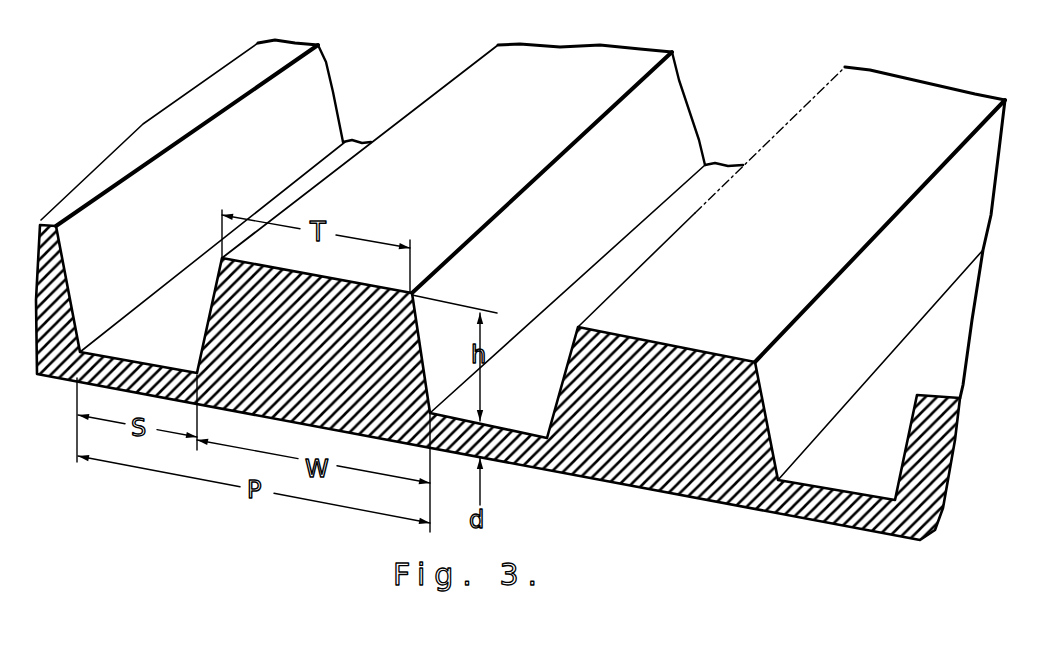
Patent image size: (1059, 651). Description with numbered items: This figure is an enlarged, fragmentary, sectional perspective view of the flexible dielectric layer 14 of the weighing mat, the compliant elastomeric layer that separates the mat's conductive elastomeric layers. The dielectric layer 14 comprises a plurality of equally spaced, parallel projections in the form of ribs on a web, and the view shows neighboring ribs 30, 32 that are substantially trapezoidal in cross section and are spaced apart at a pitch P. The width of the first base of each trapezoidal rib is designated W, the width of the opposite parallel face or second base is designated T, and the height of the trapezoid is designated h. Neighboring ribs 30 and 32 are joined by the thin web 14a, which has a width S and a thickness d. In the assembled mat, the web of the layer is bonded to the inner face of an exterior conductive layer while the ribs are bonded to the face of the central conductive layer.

The dielectric layer 14 is at (782, 123).
The web 14a is at (158, 366).
The rib 30 is at (530, 185).
The rib 32 is at (203, 123).